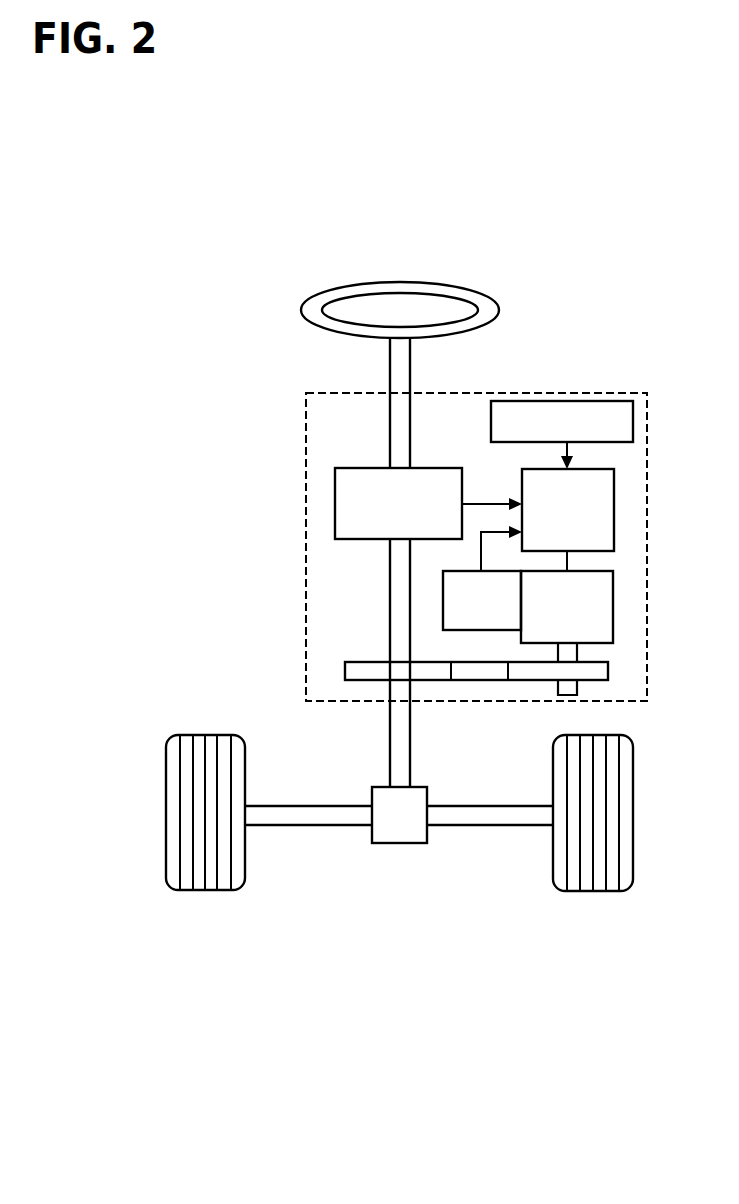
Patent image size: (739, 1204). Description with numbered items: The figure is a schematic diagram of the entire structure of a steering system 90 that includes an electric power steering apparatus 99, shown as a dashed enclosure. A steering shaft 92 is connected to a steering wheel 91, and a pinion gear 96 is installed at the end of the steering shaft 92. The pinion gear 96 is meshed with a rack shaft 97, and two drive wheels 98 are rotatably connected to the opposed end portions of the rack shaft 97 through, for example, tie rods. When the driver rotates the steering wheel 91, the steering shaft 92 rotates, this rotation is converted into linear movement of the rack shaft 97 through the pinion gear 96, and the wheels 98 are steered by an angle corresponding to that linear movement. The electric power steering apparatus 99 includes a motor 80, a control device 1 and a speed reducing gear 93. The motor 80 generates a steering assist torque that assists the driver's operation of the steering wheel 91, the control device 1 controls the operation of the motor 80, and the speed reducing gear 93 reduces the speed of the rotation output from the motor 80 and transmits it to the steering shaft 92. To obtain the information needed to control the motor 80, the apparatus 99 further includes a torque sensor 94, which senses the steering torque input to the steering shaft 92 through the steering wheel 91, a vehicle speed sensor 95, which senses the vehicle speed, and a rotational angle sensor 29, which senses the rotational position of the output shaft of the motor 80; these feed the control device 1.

The control device 1 is at (614, 493).
The rotational angle sensor 29 is at (443, 593).
The motor 80 is at (613, 598).
The steering system 90 is at (356, 930).
The steering wheel 91 is at (301, 312).
The steering shaft 92 is at (390, 370).
The speed reducing gear 93 is at (608, 668).
The torque sensor 94 is at (335, 514).
The vehicle speed sensor 95 is at (633, 423).
The pinion gear 96 is at (392, 843).
The rack shaft 97 is at (304, 826).
The drive wheels 98 is at (221, 890).
The electric power steering apparatus 99 is at (577, 392).